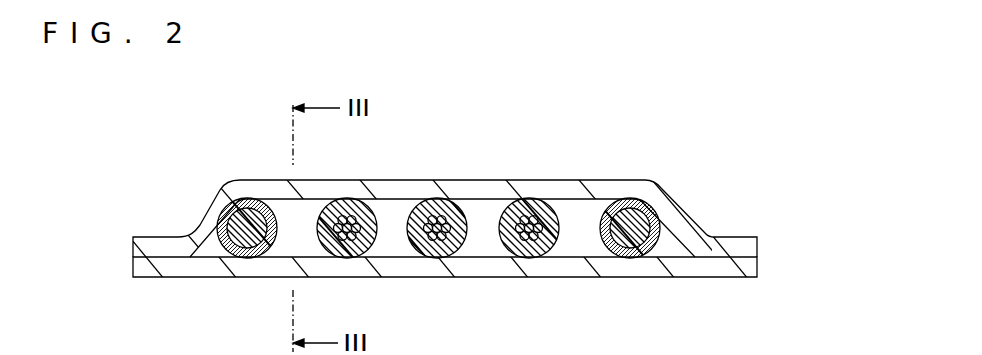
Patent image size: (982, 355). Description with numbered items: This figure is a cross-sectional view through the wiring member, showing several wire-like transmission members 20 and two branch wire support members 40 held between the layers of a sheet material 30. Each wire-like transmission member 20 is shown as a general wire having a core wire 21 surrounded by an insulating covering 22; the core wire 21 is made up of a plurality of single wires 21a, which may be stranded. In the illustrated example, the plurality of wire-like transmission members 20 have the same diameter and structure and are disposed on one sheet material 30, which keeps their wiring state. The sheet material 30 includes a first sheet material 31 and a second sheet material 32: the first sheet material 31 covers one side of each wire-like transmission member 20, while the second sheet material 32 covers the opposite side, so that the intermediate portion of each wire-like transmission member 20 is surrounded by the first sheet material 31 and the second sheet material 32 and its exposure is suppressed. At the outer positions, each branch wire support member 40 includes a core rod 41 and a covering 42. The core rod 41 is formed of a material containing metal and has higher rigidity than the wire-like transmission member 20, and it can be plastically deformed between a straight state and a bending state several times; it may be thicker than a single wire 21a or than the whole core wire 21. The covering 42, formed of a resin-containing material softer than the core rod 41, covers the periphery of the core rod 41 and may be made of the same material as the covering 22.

The wire-like transmission member 20 is at (464, 160).
The core wire 21 is at (445, 167).
The single wire 21a is at (487, 135).
The insulating covering 22 is at (467, 212).
The sheet material 30 is at (481, 225).
The first sheet material 31 is at (758, 258).
The second sheet material 32 is at (758, 238).
The branch wire support member 40 is at (438, 173).
The core rod 41 is at (288, 121).
The covering 42 is at (275, 200).